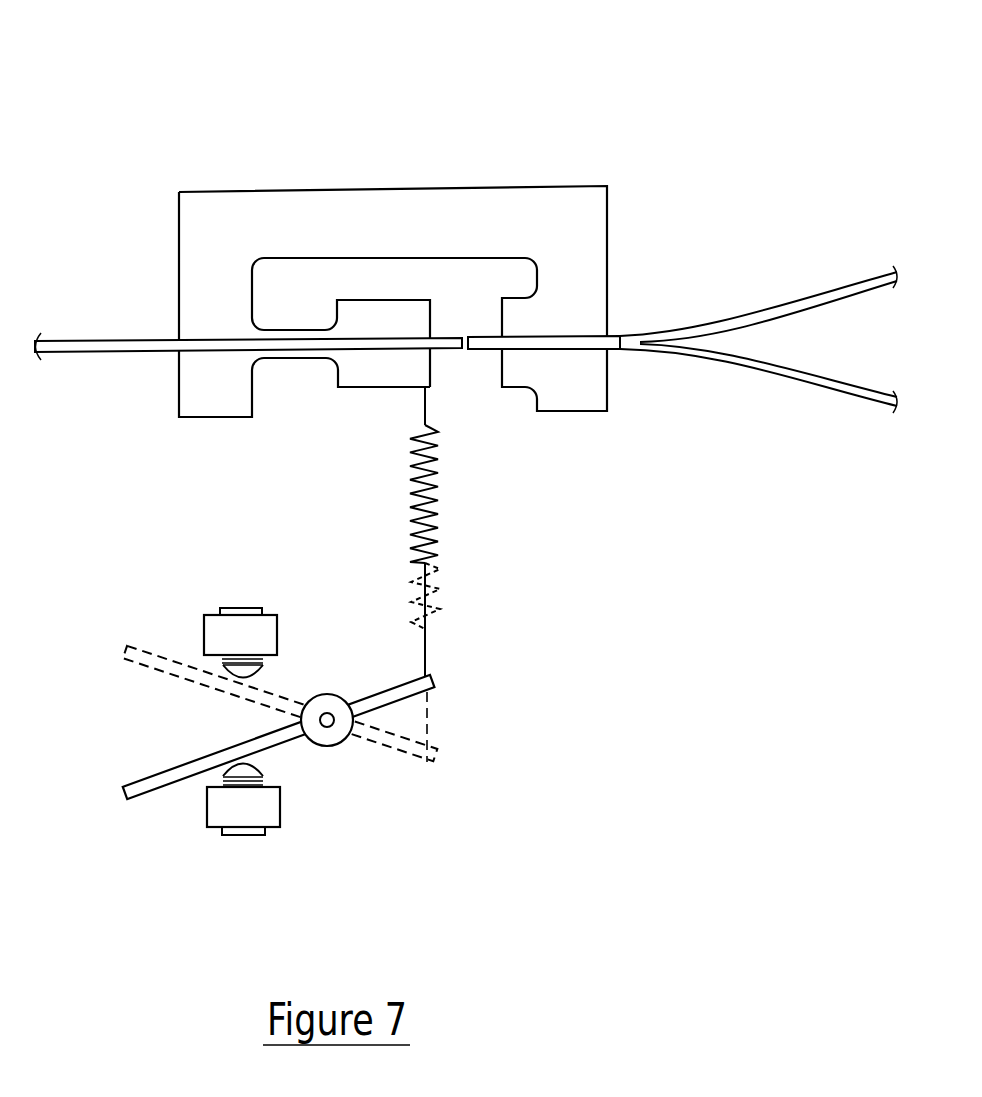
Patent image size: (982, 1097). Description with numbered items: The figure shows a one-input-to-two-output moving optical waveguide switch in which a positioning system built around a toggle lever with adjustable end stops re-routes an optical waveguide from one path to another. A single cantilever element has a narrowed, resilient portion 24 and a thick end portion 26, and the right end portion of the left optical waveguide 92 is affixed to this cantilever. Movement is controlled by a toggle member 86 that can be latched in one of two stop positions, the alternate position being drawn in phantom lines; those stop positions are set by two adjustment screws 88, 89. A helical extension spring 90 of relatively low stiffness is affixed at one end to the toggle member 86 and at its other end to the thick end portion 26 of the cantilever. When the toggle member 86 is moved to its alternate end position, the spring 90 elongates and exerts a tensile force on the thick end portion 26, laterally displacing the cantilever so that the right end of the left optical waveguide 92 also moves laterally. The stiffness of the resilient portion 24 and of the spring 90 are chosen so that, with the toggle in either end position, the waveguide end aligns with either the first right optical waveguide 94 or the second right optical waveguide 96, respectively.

The narrowed resilient portion of the cantilever element 24 is at (288, 330).
The thick end portion of the cantilever element 26 is at (403, 317).
The toggle member 86 is at (130, 774).
The adjustment screw 88 is at (222, 806).
The adjustment screw 89 is at (224, 634).
The helical extension spring 90 is at (442, 493).
The left optical waveguide 92 is at (110, 340).
The first right optical waveguide 94 is at (775, 312).
The second right optical waveguide 96 is at (775, 372).